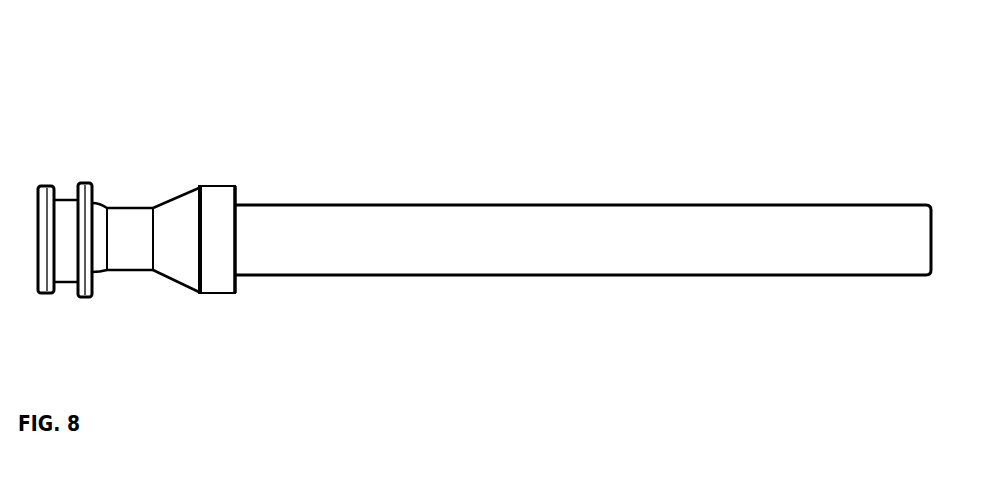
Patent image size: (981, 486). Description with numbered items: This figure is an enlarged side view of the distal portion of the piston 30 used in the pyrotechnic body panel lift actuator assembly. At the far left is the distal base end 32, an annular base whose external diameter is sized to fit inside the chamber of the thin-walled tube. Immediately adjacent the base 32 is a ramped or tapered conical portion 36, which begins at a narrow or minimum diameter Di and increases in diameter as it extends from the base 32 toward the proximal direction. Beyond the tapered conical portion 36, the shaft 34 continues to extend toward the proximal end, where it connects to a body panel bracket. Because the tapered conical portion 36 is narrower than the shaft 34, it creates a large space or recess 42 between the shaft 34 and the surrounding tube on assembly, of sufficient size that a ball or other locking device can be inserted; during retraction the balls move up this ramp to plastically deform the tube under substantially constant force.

The piston 30 is at (54, 46).
The distal base end 32 is at (48, 184).
The minimum diameter Di is at (108, 207).
The tapered conical portion 36 is at (165, 192).
The shaft 34 is at (363, 233).
The recess 42 is at (107, 283).